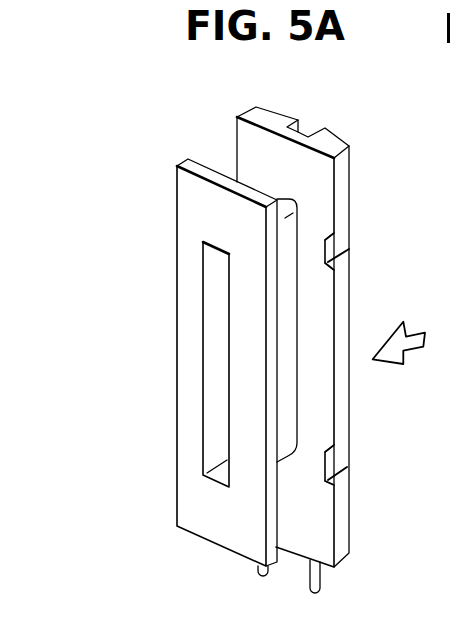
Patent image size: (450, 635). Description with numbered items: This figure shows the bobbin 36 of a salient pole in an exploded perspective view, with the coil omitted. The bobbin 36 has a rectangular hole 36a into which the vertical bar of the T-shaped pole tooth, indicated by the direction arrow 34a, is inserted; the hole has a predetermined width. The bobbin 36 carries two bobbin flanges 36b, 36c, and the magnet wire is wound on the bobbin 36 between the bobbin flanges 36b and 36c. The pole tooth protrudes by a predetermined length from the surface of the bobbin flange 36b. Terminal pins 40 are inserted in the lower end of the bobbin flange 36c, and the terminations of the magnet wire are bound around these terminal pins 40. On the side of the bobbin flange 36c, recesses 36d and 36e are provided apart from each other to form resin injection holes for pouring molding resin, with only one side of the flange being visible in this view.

The bobbin 36 is at (160, 165).
The rectangular hole 36a is at (213, 443).
The bobbin flange 36b is at (195, 215).
The bobbin flange 36c is at (252, 145).
The recess 36d is at (327, 250).
The lower notch 36e is at (330, 462).
The insertion direction arrow 34a is at (449, 295).
The terminal pin 40 is at (320, 583).